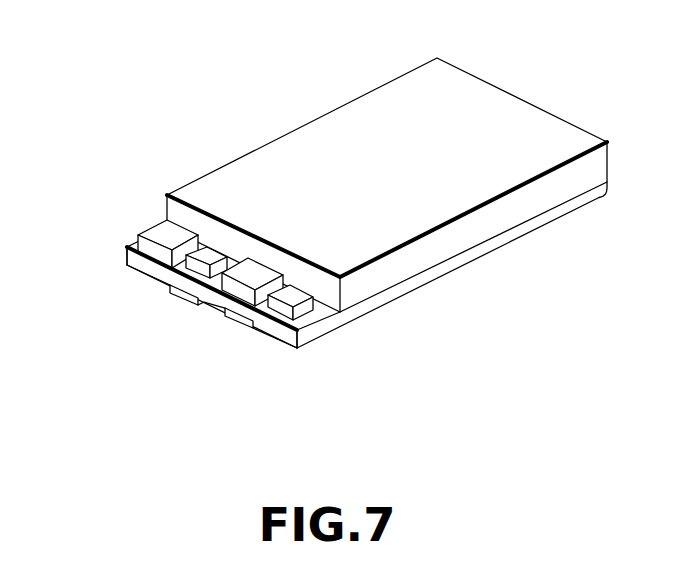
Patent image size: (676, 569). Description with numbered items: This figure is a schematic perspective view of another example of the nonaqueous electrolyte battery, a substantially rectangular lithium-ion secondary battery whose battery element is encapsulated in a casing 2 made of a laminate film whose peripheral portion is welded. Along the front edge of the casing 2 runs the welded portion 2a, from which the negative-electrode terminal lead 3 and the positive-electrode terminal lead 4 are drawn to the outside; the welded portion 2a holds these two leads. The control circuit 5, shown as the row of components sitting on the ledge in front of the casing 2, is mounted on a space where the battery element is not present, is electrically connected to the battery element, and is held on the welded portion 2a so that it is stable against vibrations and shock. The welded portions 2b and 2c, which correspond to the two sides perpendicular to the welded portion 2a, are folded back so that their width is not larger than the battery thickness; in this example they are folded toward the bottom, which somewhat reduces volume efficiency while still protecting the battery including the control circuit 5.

The casing 2 is at (490, 97).
The welded portion 2a is at (207, 307).
The welded portion 2b is at (133, 268).
The welded portion 2c is at (278, 340).
The negative-electrode terminal lead 3 is at (237, 318).
The positive-electrode terminal lead 4 is at (173, 290).
The control circuit 5 is at (160, 230).